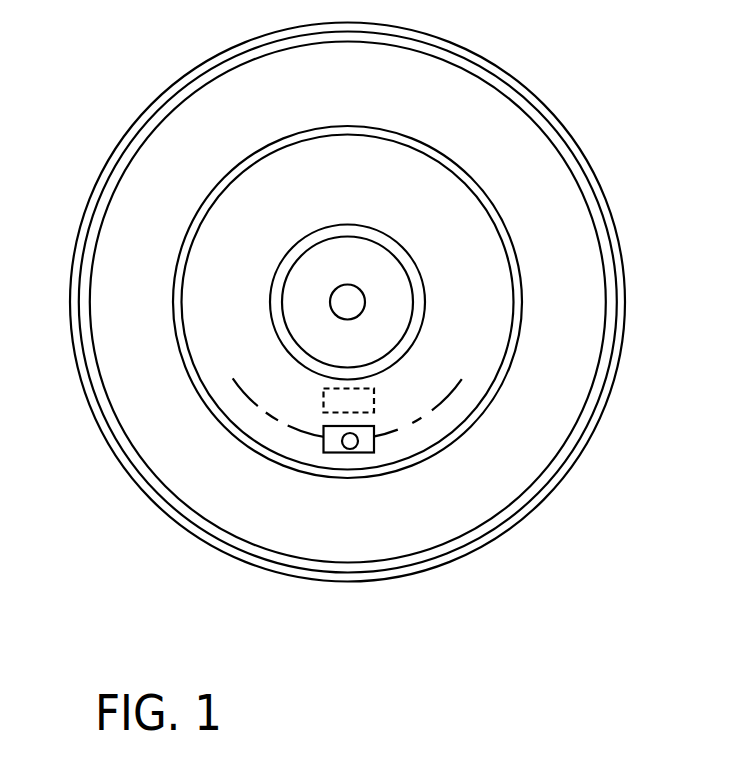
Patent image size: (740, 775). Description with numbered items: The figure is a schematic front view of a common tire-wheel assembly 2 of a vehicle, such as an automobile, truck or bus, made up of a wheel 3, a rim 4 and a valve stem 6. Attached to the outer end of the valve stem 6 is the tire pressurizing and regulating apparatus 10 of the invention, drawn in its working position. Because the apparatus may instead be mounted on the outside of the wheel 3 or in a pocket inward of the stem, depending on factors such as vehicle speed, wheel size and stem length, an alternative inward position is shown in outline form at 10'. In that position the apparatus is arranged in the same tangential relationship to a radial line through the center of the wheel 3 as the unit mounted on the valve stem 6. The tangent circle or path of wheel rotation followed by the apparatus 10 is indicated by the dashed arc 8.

The tire-wheel assembly 2 is at (122, 96).
The wheel 3 is at (217, 272).
The rim 4 is at (175, 323).
The valve stem 6 is at (348, 449).
The tangent circle 8 is at (240, 394).
The tire pressurizing and regulating apparatus 10 is at (407, 526).
The tire pressurizing and regulating apparatus in inward position 10' is at (455, 468).